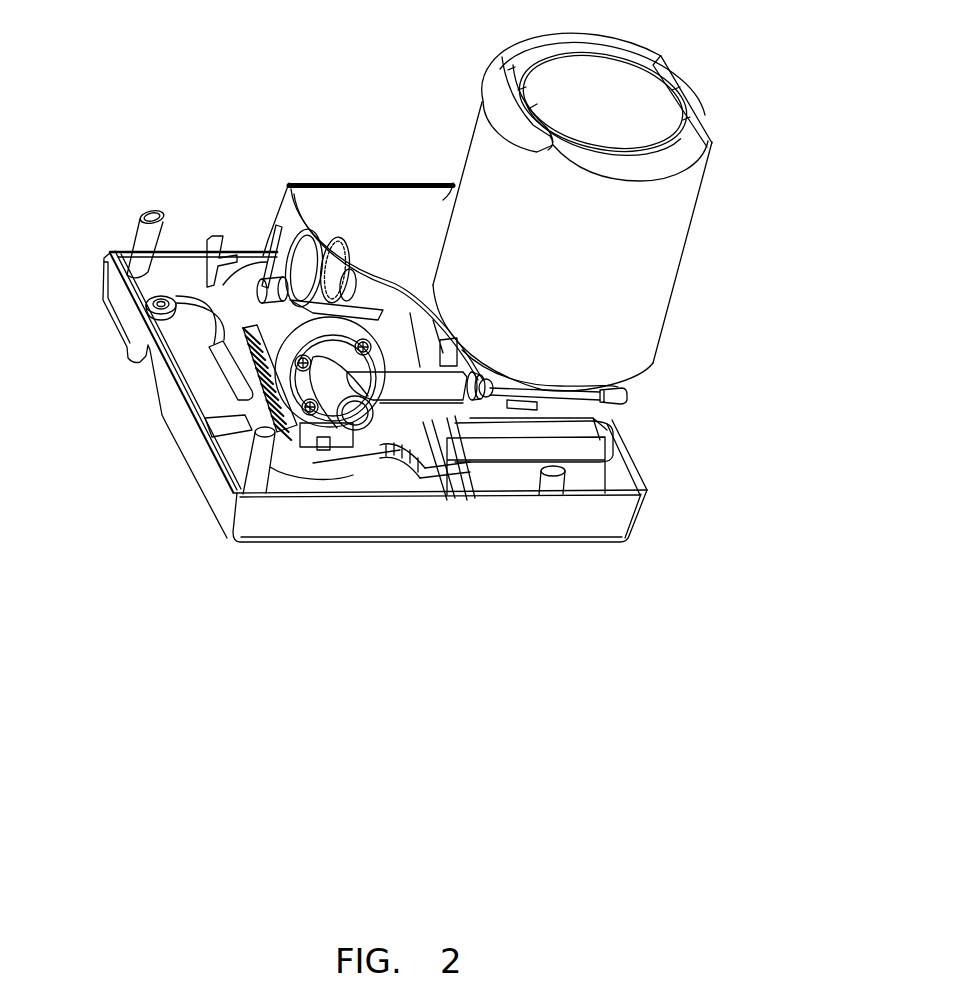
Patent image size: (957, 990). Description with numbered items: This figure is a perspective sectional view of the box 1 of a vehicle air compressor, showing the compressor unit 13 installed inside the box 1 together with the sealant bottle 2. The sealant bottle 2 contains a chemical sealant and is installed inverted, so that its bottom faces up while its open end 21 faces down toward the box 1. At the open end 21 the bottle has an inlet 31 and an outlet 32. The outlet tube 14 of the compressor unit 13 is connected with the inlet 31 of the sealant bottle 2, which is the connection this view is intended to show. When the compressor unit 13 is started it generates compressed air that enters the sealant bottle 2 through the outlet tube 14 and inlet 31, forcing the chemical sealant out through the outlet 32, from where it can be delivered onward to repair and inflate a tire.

The box 1 is at (368, 203).
The sealant bottle 2 is at (616, 215).
The open end 21 is at (632, 358).
The compressor unit 13 is at (243, 377).
The outlet tube 14 is at (412, 387).
The inlet 31 is at (477, 382).
The outlet 32 is at (633, 395).